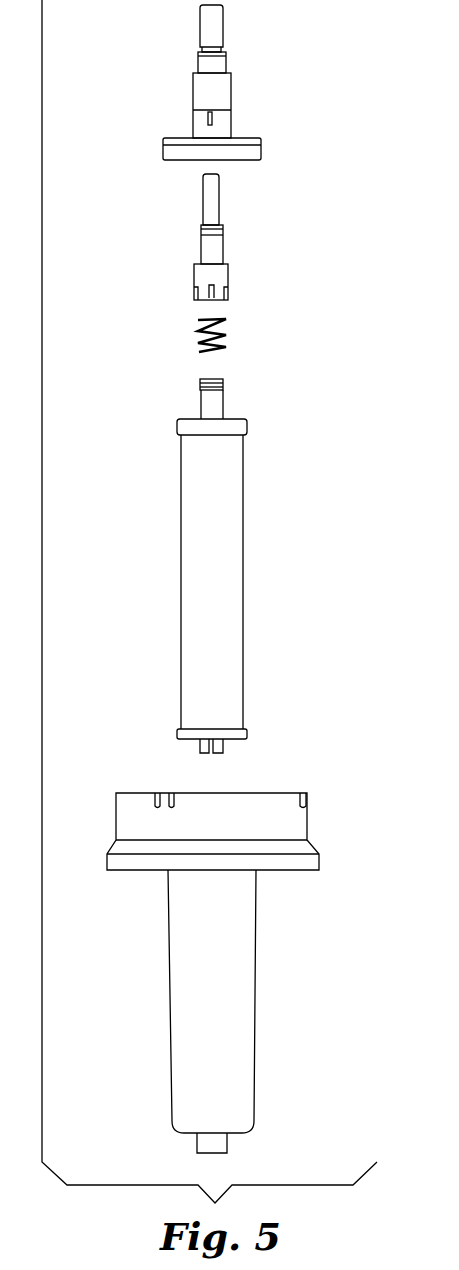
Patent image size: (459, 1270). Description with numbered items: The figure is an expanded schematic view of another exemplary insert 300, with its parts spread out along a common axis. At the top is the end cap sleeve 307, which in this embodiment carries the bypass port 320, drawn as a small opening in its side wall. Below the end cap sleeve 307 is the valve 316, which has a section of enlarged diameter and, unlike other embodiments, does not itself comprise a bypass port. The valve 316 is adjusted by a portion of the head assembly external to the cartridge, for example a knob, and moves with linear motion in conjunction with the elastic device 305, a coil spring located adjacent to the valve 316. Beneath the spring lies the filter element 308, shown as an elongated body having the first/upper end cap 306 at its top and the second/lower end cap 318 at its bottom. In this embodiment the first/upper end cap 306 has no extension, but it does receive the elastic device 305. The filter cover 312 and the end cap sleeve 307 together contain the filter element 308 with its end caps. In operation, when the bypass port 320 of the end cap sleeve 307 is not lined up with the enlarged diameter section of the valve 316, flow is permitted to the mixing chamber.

The insert 300 is at (258, 26).
The elastic device 305 is at (222, 328).
The first/upper end cap 306 is at (238, 425).
The end cap sleeve 307 is at (202, 93).
The filter element 308 is at (230, 555).
The filter cover 312 is at (295, 827).
The valve 316 is at (209, 249).
The second/lower end cap 318 is at (240, 1120).
The bypass port 320 is at (215, 118).